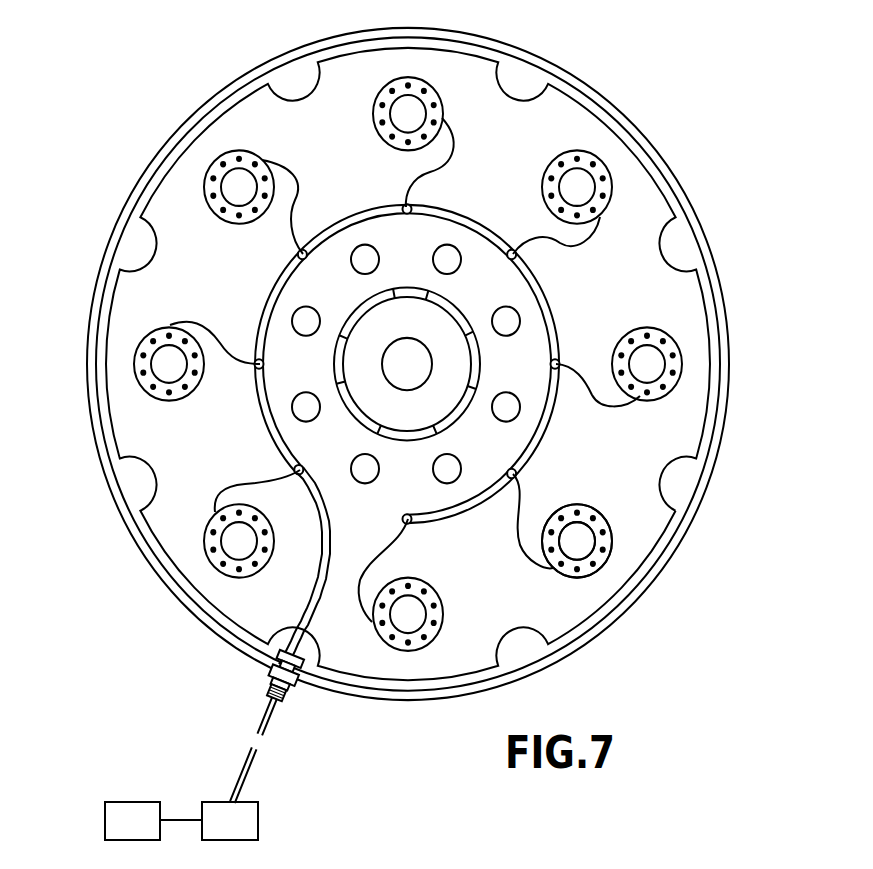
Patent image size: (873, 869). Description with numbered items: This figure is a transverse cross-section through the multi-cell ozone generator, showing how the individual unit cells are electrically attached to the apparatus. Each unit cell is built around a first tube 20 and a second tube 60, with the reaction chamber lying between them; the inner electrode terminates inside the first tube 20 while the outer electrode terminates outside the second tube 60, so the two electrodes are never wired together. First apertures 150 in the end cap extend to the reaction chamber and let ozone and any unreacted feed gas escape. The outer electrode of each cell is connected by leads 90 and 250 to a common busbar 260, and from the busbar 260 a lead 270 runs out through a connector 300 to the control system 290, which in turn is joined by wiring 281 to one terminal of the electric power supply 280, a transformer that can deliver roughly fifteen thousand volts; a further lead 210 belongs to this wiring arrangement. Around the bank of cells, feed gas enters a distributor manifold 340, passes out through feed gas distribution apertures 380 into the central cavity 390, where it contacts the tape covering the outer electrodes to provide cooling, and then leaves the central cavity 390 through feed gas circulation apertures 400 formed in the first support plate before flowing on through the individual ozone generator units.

The first tube 20 is at (598, 530).
The second tube 60 is at (607, 572).
The lead 90 is at (700, 859).
The first apertures 150 is at (600, 555).
The lead 210 is at (431, 862).
The lead 250 is at (250, 483).
The busbar 260 is at (278, 290).
The lead 270 is at (260, 733).
The electric power supply 280 is at (132, 815).
The wiring 281 is at (178, 820).
The control systems 290 is at (248, 822).
The connector 300 is at (268, 677).
The distributor manifold 340 is at (480, 367).
The feed gas distribution apertures 380 is at (476, 340).
The central cavity 390 is at (330, 287).
The feed gas circulation apertures 400 is at (307, 320).